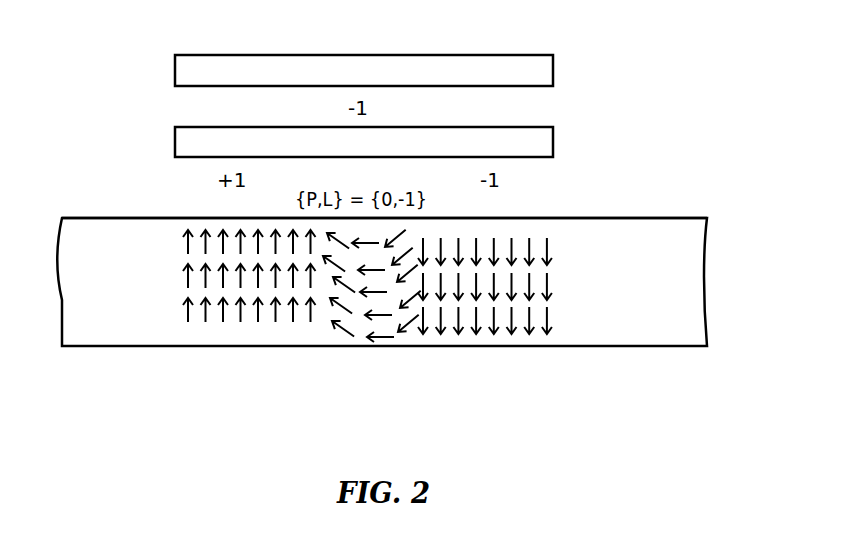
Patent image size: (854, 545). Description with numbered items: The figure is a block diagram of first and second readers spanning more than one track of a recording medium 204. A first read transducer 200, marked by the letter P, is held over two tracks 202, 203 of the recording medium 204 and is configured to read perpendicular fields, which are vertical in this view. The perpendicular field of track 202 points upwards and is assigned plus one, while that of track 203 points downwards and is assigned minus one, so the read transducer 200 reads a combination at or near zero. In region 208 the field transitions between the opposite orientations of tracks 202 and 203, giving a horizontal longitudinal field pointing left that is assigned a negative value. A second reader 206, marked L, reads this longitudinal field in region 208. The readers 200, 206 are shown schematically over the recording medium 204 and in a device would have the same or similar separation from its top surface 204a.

The first read transducer 200 is at (553, 140).
The second reader 206 is at (553, 67).
The recording medium 204 is at (650, 346).
The top surface of the recording medium 204a is at (667, 218).
The track 202 is at (322, 349).
The region 208 is at (445, 373).
The track 203 is at (560, 349).